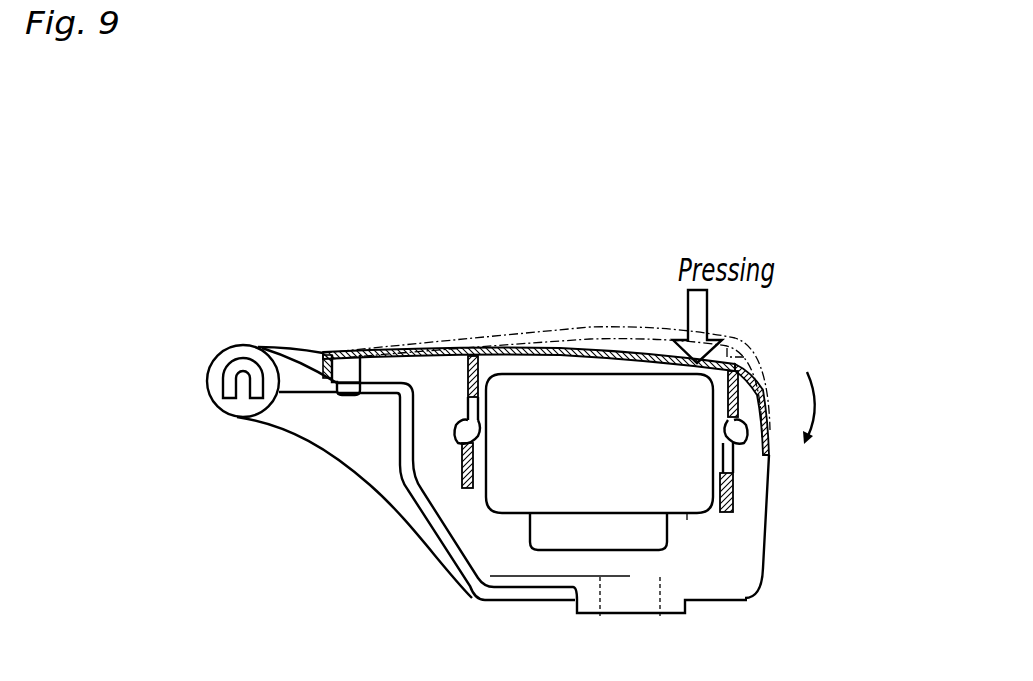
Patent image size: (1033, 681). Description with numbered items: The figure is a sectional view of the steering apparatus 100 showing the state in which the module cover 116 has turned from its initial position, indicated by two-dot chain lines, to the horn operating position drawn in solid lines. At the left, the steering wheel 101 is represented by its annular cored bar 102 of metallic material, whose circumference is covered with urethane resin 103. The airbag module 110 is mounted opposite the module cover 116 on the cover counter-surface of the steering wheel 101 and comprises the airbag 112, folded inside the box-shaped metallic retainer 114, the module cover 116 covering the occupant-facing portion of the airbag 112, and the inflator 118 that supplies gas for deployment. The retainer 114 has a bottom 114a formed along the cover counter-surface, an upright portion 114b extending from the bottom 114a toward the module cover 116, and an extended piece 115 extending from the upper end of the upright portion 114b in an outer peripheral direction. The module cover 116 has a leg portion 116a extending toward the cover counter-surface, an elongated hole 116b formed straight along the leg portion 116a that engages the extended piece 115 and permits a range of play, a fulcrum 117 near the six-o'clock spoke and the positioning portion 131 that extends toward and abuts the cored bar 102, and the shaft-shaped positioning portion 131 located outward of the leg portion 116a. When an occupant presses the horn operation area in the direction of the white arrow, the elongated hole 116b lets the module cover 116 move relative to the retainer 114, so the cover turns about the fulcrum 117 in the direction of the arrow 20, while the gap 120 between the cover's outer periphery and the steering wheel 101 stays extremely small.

The steering apparatus 100 is at (510, 276).
The arrow 20 is at (828, 408).
The steering wheel 101 is at (224, 333).
The annular cored bar 102 is at (290, 393).
The urethane resin 103 is at (233, 403).
The airbag module 110 is at (457, 343).
The airbag 112 is at (522, 475).
The retainer 114 is at (713, 517).
The bottom 114a is at (687, 520).
The upright portion 114b is at (483, 513).
The extended piece 115 is at (458, 445).
The module cover 116 is at (627, 357).
The leg portion 116a is at (470, 387).
The elongated hole 116b is at (462, 470).
The fulcrum 117 is at (332, 355).
The inflator 118 is at (548, 533).
The gap 120 is at (314, 339).
The positioning portion 131 is at (364, 362).